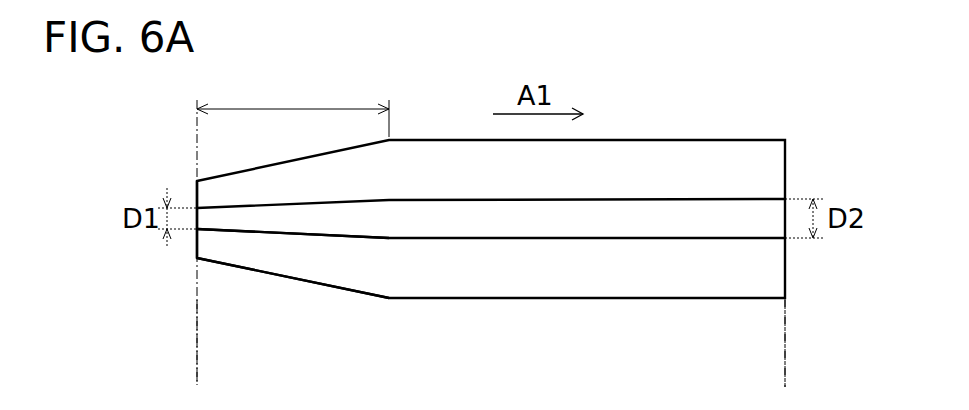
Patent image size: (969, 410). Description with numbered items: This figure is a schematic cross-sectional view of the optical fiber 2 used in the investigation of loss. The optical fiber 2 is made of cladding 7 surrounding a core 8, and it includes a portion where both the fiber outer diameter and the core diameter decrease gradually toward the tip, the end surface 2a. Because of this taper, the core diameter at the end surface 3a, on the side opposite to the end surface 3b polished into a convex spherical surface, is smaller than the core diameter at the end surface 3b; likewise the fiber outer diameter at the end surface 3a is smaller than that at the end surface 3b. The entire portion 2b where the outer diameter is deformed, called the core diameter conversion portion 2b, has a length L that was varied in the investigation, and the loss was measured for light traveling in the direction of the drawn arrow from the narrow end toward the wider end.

The optical fiber 2 is at (766, 106).
The end surface 2a is at (195, 191).
The core diameter conversion portion 2b is at (293, 105).
The end surface 3a is at (194, 350).
The end surface 3b is at (788, 348).
The cladding 7 is at (337, 262).
The core 8 is at (486, 223).